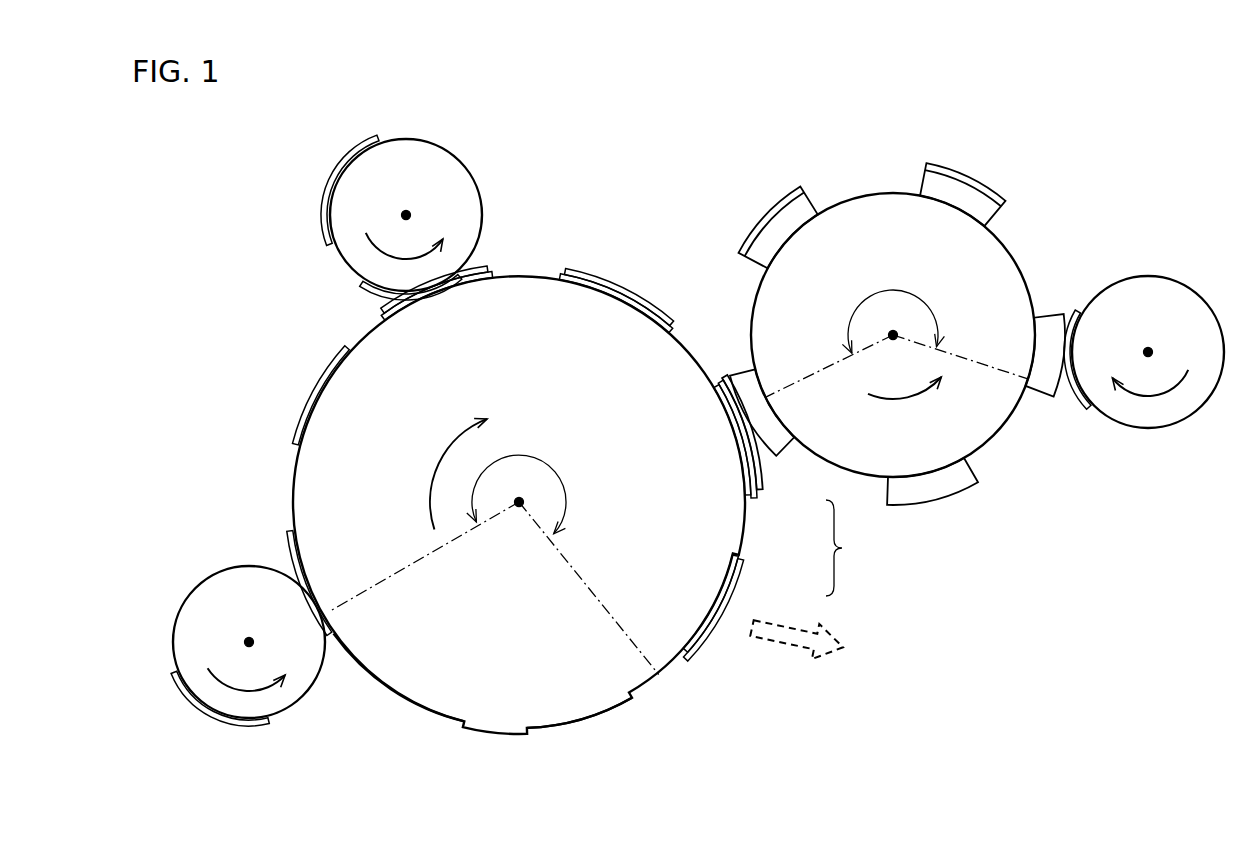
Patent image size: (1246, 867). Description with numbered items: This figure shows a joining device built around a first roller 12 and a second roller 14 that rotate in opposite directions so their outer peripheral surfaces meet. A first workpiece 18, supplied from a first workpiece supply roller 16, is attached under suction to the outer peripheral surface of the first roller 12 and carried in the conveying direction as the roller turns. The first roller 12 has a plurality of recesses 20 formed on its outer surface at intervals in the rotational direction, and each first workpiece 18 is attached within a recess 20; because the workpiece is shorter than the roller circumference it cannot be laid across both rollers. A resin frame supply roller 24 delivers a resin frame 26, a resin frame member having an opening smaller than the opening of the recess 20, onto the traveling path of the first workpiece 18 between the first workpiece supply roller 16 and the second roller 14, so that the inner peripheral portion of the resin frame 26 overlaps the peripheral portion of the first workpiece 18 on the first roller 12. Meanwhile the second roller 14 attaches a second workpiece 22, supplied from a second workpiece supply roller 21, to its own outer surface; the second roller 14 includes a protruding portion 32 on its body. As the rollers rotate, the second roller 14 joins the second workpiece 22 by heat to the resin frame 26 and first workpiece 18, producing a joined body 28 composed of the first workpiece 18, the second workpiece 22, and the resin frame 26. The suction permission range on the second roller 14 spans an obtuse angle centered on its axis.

The first roller 12 is at (503, 698).
The second roller 14 is at (990, 432).
The first workpiece supply roller 16 is at (207, 612).
The first workpiece 18 is at (612, 300).
The recess 20 is at (410, 715).
The second workpiece supply roller 21 is at (1167, 276).
The second workpiece 22 is at (762, 467).
The resin frame supply roller 24 is at (417, 138).
The resin frame 26 is at (486, 268).
The joined body 28 is at (850, 548).
The protruding portion 32 is at (927, 487).